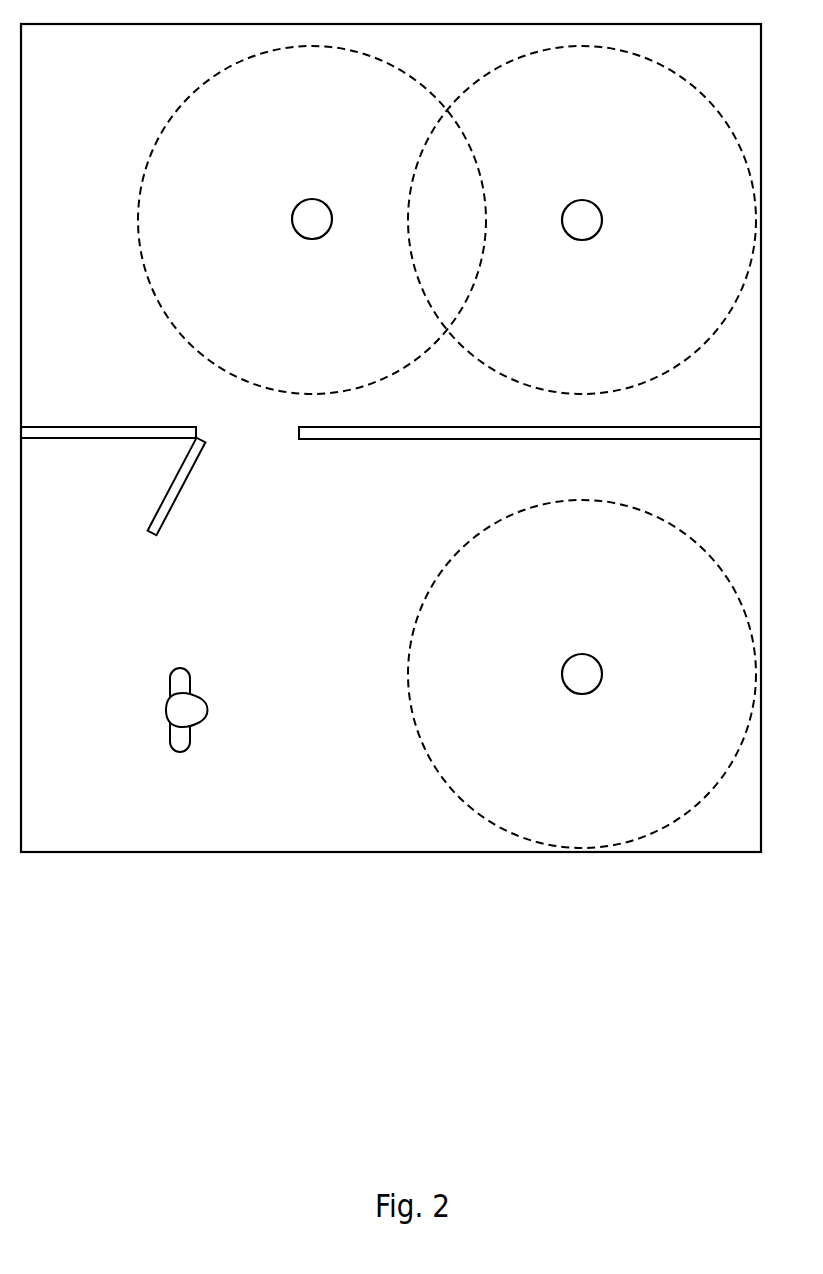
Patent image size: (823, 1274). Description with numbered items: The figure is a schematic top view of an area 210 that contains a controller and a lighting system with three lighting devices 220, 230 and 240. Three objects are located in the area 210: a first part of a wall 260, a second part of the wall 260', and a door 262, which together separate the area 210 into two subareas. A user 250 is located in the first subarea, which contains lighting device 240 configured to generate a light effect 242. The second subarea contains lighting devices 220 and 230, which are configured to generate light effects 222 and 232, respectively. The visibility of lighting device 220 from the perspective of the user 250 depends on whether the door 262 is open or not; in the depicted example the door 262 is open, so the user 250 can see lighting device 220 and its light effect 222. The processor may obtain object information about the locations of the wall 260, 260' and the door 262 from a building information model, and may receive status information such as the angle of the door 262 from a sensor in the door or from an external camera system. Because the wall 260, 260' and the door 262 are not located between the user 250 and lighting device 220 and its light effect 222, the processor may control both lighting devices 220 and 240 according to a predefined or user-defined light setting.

The area 210 is at (100, 892).
The lighting device 220 is at (312, 219).
The light effect 222 is at (210, 90).
The lighting device 230 is at (582, 220).
The light effect 232 is at (614, 385).
The lighting device 240 is at (582, 674).
The light effect 242 is at (420, 641).
The user 250 is at (185, 710).
The first part of a wall 260 is at (530, 479).
The second part of the wall 260' is at (108, 385).
The door 262 is at (186, 477).